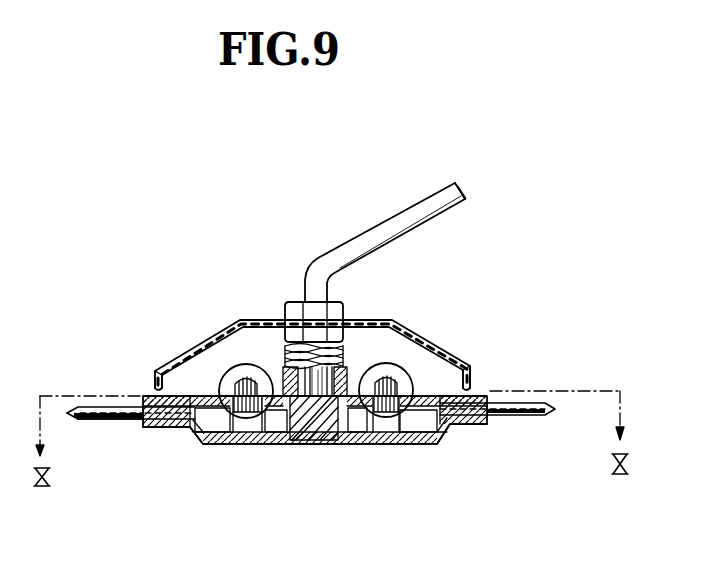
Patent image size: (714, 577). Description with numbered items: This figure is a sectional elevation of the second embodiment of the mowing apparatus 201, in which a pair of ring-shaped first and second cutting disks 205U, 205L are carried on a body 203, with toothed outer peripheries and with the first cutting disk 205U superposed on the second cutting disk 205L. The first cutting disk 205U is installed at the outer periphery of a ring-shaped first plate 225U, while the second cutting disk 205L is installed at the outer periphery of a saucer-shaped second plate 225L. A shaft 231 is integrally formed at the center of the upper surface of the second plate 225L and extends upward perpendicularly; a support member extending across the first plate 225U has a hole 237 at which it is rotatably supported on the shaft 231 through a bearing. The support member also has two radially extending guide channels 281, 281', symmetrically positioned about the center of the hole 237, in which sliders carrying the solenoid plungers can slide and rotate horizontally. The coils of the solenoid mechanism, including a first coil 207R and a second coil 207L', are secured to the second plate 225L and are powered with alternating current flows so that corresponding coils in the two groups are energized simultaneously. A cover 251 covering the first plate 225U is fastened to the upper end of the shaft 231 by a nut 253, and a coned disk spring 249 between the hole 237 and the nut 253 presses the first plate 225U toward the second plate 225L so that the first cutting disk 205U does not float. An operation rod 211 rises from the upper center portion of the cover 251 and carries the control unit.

The mowing apparatus 201 is at (319, 206).
The body 203 is at (371, 455).
The operation rod 211 is at (387, 233).
The nut 253 is at (367, 318).
The spring 249 is at (347, 335).
The shaft 231 is at (372, 328).
The cover 251 is at (392, 368).
The first coil 207R is at (238, 358).
The second coil 207L' is at (489, 357).
The first plate 225U is at (200, 362).
The second plate 225L is at (218, 446).
The first cutting disk 205U is at (133, 397).
The second cutting disk 205L is at (117, 420).
The guide channel 281 is at (219, 472).
The guide channel 281' is at (442, 460).
The hole 237 is at (323, 442).